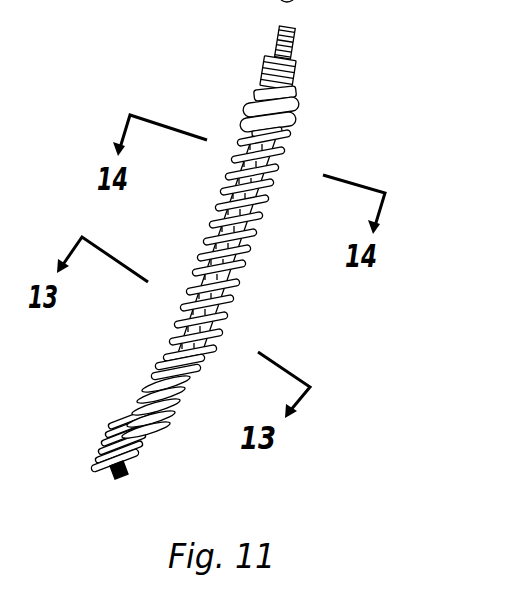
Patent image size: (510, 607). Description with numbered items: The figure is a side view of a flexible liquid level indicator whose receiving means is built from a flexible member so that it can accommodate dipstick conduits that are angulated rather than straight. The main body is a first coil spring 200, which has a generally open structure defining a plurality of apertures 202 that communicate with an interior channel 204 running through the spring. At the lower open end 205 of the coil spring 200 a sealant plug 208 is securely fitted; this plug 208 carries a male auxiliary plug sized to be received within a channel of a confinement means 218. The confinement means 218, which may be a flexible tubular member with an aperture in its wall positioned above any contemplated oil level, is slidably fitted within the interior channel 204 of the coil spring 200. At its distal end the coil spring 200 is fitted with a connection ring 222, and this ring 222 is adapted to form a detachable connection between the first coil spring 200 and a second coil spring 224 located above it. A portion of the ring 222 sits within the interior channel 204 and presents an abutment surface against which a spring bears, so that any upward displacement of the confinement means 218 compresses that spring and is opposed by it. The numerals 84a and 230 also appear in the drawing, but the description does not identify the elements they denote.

The second coil spring 224 is at (300, 64).
The connection ring 222 is at (300, 99).
The flexible shaft 84a is at (306, 159).
The spring ring 230 is at (205, 240).
The confinement means 218 is at (240, 268).
The first coil spring 200 is at (232, 307).
The apertures 202 is at (200, 373).
The interior channel 204 is at (140, 386).
The open end 205 is at (135, 466).
The sealant plug 208 is at (118, 470).